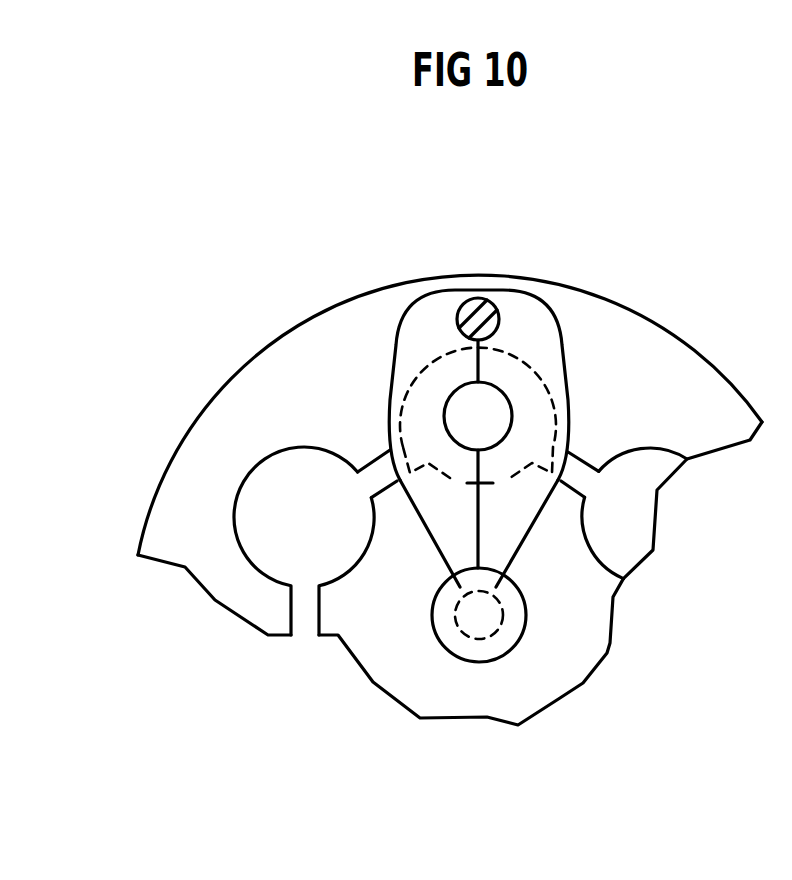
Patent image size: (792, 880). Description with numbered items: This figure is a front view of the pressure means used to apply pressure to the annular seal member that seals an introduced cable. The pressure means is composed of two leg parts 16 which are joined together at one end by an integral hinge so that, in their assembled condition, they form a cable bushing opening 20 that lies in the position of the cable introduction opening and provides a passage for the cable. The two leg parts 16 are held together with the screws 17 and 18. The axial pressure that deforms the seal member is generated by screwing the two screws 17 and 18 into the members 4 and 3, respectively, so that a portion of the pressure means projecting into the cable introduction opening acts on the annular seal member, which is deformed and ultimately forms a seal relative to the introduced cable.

The member 3 is at (403, 670).
The member 4 is at (247, 382).
The leg part 16 is at (432, 335).
The screw 17 is at (460, 295).
The screw 18 is at (507, 640).
The cable bushing opening 20 is at (513, 400).